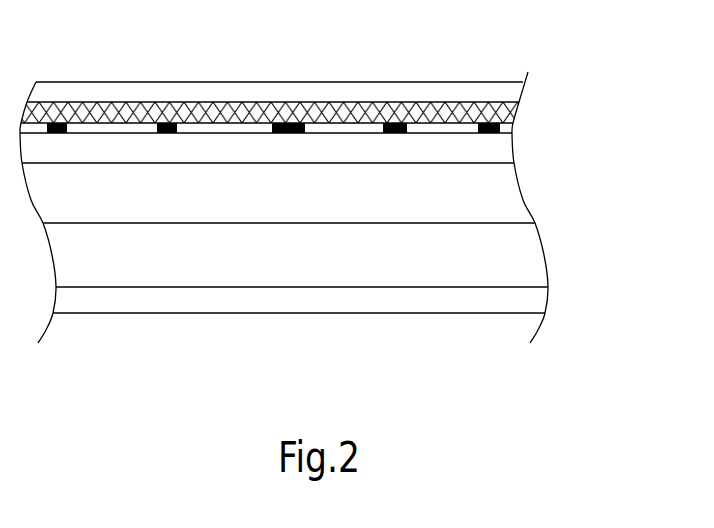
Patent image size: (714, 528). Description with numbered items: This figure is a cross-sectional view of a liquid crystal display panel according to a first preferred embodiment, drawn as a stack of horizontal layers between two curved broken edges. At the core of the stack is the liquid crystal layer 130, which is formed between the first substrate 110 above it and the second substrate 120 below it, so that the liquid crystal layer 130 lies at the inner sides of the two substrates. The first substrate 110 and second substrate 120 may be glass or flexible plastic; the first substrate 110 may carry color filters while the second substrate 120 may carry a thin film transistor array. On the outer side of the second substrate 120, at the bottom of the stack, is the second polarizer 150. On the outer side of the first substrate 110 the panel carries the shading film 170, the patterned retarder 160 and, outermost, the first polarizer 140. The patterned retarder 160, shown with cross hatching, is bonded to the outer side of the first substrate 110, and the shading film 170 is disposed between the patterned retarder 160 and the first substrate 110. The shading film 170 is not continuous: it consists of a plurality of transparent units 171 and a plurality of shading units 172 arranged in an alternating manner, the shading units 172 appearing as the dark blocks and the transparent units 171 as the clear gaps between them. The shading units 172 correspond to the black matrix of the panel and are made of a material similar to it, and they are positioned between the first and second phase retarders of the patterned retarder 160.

The first substrate 110 is at (498, 153).
The second substrate 120 is at (510, 257).
The liquid crystal layer 130 is at (498, 193).
The first polarizer 140 is at (508, 85).
The second polarizer 150 is at (510, 298).
The patterned retarder 160 is at (311, 73).
The shading film 170 is at (313, 92).
The transparent units 171 is at (227, 130).
The shading units 172 is at (282, 113).